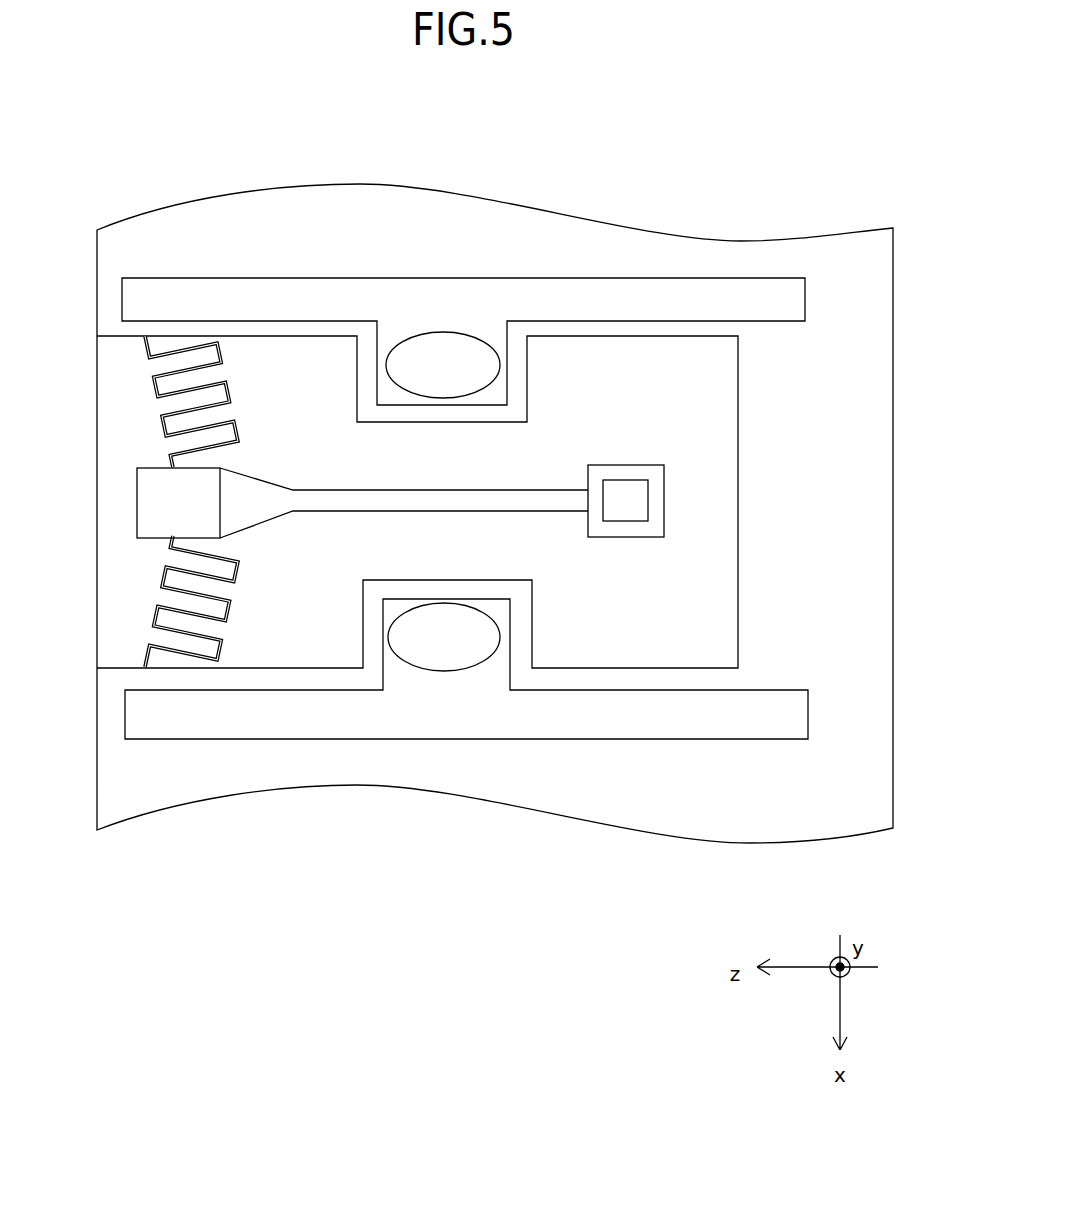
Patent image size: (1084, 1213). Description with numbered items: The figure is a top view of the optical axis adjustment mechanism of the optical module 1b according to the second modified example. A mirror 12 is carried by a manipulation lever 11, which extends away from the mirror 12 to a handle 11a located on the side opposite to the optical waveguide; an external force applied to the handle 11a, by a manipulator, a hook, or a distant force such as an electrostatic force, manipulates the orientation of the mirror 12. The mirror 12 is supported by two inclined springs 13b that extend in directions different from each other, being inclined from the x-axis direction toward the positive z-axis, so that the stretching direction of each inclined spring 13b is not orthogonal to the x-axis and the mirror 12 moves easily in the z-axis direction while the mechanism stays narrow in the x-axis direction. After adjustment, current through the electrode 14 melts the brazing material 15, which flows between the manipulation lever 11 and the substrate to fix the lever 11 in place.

The optical module 1b is at (753, 179).
The manipulation lever 11 is at (545, 493).
The handle 11a is at (625, 490).
The mirror 12 is at (141, 503).
The inclined spring 13b is at (165, 425).
The electrode 14 is at (702, 288).
The brazing material 15 is at (441, 348).